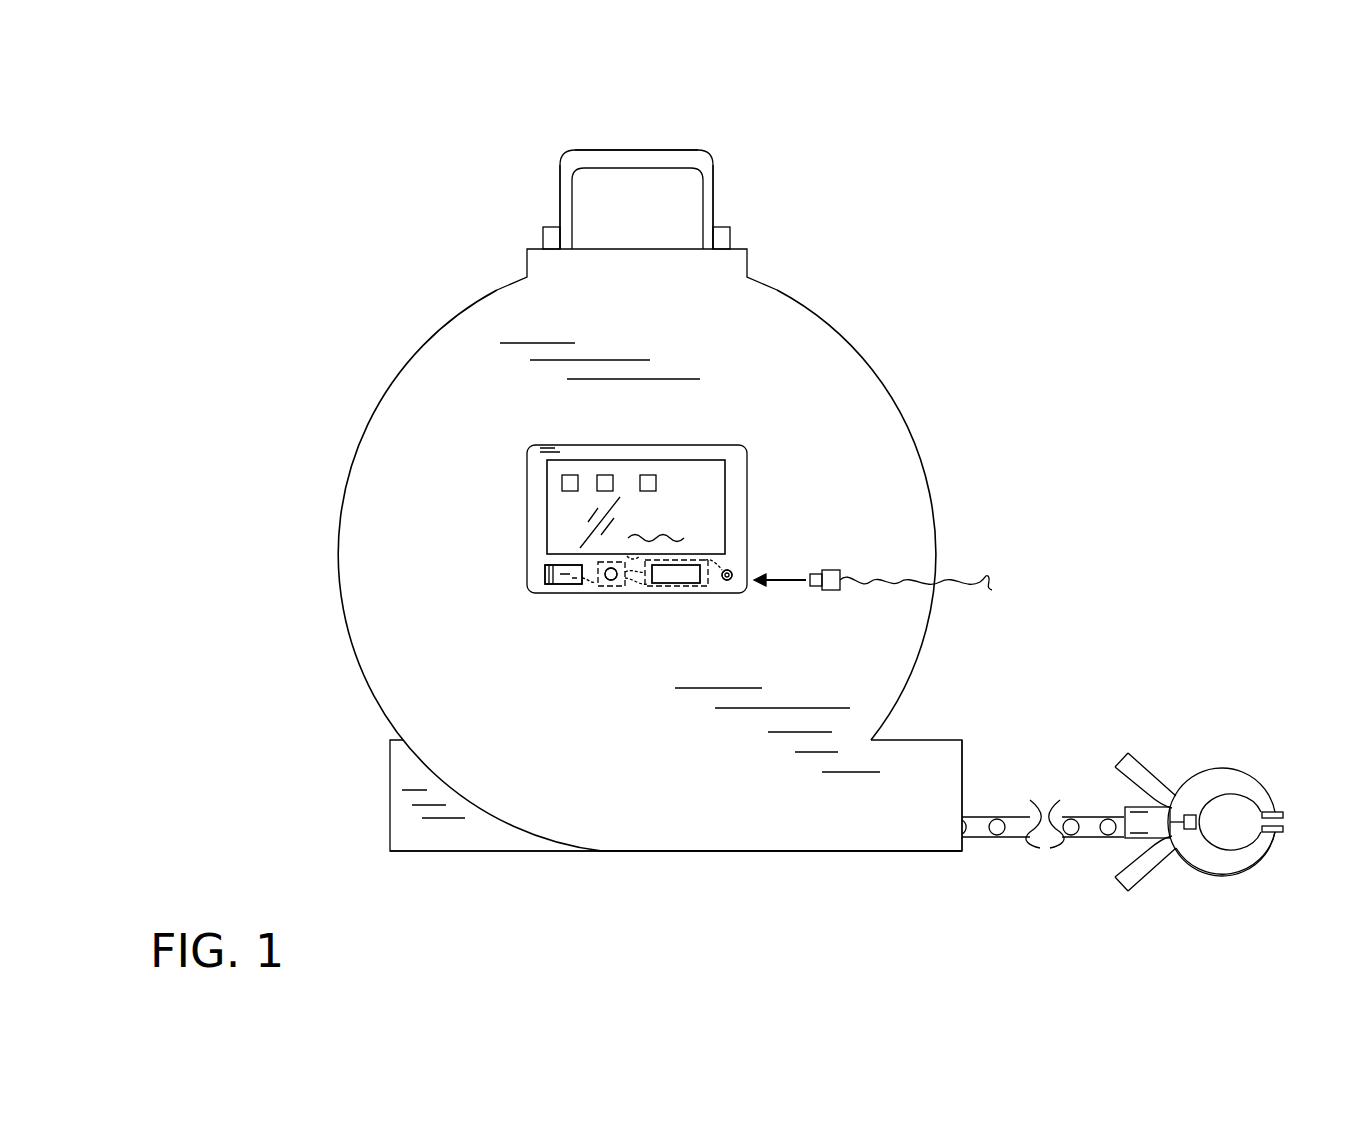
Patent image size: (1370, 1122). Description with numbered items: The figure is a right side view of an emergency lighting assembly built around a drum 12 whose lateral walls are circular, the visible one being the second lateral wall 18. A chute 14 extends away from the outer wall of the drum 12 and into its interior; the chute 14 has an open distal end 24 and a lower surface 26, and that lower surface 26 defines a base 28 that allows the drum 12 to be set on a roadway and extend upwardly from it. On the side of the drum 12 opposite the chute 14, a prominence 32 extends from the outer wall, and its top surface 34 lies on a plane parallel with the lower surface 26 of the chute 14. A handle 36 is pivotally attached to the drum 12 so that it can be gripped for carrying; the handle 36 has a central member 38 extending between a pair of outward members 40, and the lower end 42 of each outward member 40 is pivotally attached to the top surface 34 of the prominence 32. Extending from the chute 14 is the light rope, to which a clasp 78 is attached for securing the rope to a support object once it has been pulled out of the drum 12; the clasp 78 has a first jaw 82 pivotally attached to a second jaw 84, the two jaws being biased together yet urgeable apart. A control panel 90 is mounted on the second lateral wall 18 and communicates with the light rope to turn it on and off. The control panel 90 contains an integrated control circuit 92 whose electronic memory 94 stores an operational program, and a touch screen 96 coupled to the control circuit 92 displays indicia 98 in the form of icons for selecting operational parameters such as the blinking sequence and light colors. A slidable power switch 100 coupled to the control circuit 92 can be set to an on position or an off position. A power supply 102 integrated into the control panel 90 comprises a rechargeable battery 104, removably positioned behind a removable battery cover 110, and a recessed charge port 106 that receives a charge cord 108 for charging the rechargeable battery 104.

The drum 12 is at (850, 348).
The chute 14 is at (963, 740).
The second lateral wall 18 is at (462, 375).
The distal end 24 is at (963, 768).
The lower surface 26 is at (662, 851).
The base 28 is at (545, 858).
The prominence 32 is at (532, 249).
The top surface 34 is at (676, 249).
The handle 36 is at (572, 150).
The central member 38 is at (637, 150).
The outward members 40 is at (560, 188).
The lower end 42 is at (560, 243).
The clasp 78 is at (1225, 746).
The first jaw 82 is at (1243, 770).
The second jaw 84 is at (1210, 870).
The control panel 90 is at (527, 523).
The control circuit 92 is at (603, 593).
The electronic memory 94 is at (545, 574).
The touch screen 96 is at (547, 477).
The indicia 98 is at (658, 481).
The power switch 100 is at (545, 566).
The power supply 102 is at (735, 586).
The rechargeable battery 104 is at (660, 593).
The charge port 106 is at (745, 571).
The charge cord 108 is at (947, 582).
The battery cover 110 is at (687, 593).